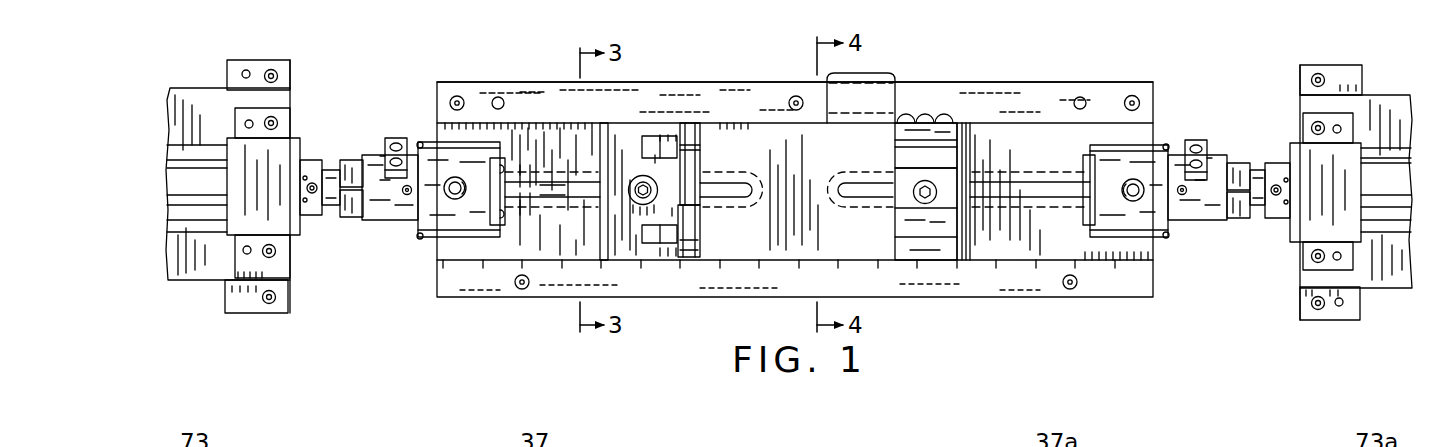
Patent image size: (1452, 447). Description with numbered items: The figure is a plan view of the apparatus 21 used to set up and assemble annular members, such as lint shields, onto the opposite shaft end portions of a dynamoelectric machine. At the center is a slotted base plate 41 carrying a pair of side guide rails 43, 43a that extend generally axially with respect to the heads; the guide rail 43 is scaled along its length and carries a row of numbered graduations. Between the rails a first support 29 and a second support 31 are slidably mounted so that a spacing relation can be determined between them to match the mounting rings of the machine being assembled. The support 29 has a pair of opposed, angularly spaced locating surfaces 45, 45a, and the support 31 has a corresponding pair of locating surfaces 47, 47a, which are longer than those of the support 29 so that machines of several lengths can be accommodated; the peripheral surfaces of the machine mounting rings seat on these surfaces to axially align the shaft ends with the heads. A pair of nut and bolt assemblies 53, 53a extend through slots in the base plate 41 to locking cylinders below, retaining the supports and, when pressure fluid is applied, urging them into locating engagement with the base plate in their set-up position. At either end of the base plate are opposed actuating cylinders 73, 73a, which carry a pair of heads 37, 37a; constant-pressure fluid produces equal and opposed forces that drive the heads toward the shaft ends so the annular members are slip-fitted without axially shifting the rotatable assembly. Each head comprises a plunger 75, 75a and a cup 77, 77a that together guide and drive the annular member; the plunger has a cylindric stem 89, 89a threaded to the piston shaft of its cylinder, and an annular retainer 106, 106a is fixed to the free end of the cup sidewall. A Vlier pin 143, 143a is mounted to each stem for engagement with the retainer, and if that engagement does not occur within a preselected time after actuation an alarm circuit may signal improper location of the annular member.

The apparatus 21 is at (1014, 72).
The support 29 is at (598, 226).
The support 31 is at (962, 226).
The head 37 is at (412, 242).
The head 37a is at (1177, 242).
The slotted base plate 41 is at (795, 189).
The guide rail 43 is at (666, 288).
The guide rail 43a is at (704, 95).
The locating surface 45 is at (690, 222).
The locating surface 45a is at (690, 156).
The locating surface 47 is at (903, 222).
The locating surface 47a is at (903, 157).
The nut and bolt assembly 53 is at (637, 179).
The nut and bolt assembly 53a is at (934, 185).
The actuating cylinder 73 is at (297, 99).
The actuating cylinder 73a is at (1297, 97).
The plunger 75 is at (345, 226).
The plunger 75a is at (1251, 230).
The cup 77 is at (455, 141).
The cup 77a is at (1108, 144).
The stem 89 is at (383, 222).
The stem 89a is at (1200, 222).
The annular retainer 106 is at (420, 141).
The annular retainer 106a is at (1168, 146).
The Vlier pin 143 is at (383, 150).
The Vlier pin 143a is at (1212, 152).